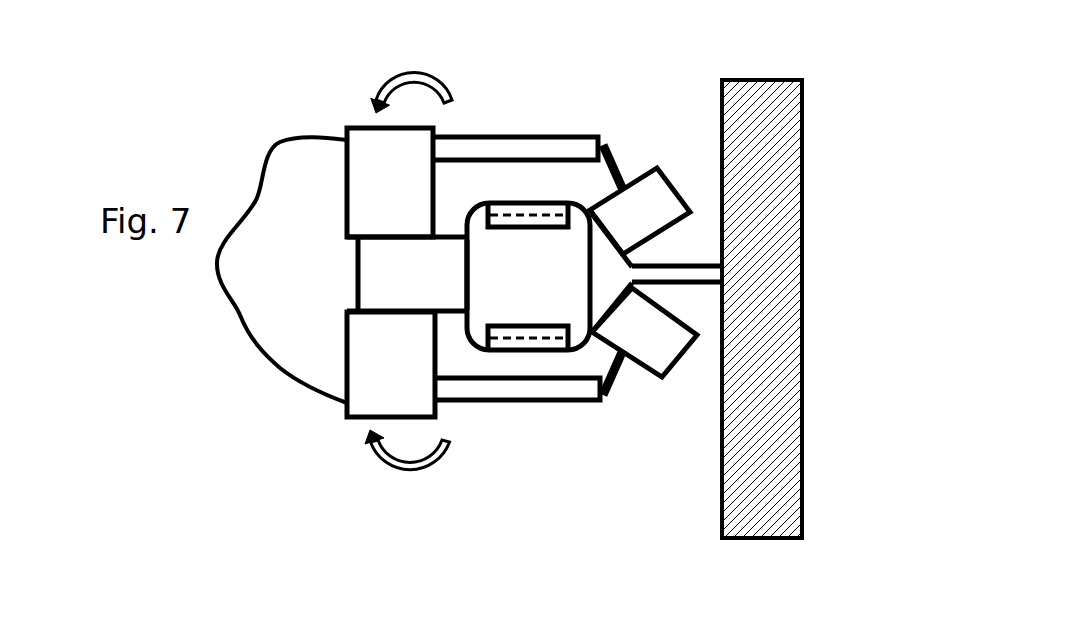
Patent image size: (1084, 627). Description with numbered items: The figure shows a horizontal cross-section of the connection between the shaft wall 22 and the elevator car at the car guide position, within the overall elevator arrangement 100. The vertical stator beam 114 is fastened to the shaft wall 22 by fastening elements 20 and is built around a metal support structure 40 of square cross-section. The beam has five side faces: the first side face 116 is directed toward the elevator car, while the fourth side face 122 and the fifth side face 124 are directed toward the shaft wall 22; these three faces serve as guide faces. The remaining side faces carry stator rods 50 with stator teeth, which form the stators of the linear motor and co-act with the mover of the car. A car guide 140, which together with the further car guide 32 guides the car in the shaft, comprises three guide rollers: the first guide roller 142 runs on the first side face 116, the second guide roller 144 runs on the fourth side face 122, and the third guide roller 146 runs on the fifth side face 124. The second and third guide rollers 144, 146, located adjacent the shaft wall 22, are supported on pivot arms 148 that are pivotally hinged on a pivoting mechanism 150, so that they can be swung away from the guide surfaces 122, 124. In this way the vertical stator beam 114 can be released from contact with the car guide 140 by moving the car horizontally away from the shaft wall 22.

The drilling assembly 100 is at (413, 6).
The car guide 32 is at (599, 6).
The pivoting mechanism 150 is at (410, 153).
The first guide roller 142 is at (410, 280).
The metal support structure 40 is at (497, 262).
The first side face 116 is at (462, 273).
The stator rod 50 is at (523, 215).
The pivot arms 148 is at (515, 147).
The vertical stator beam 114 is at (588, 187).
The fifth side face 124 is at (594, 342).
The fourth side face 122 is at (600, 205).
The fastening elements 20 is at (677, 275).
The second guide roller 144 is at (643, 212).
The third guide roller 146 is at (655, 338).
The shaft wall 22 is at (780, 315).
The car guide 140 is at (542, 450).